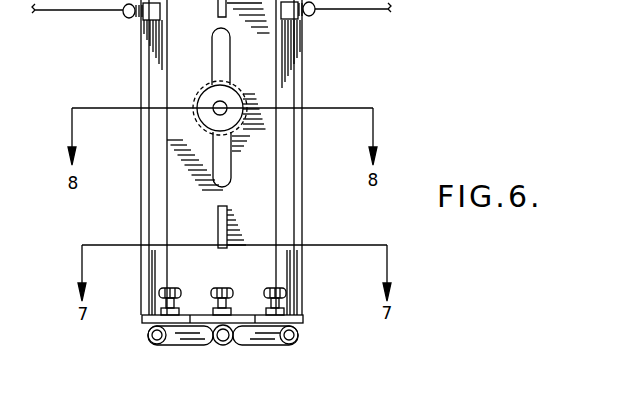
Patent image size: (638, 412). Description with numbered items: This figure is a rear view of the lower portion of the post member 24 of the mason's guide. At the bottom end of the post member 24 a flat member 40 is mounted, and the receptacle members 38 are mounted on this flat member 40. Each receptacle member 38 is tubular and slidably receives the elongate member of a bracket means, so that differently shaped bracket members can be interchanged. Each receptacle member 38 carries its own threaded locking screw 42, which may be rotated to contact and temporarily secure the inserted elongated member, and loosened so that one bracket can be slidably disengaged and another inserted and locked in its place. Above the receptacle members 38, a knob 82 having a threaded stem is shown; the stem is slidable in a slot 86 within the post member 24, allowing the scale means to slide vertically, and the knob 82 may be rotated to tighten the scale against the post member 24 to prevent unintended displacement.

The post member 24 is at (218, 220).
The receptacle member 38 is at (298, 335).
The flat member 40 is at (200, 320).
The threaded locking screw 42 is at (163, 285).
The knob 82 is at (233, 100).
The slot 86 is at (224, 58).